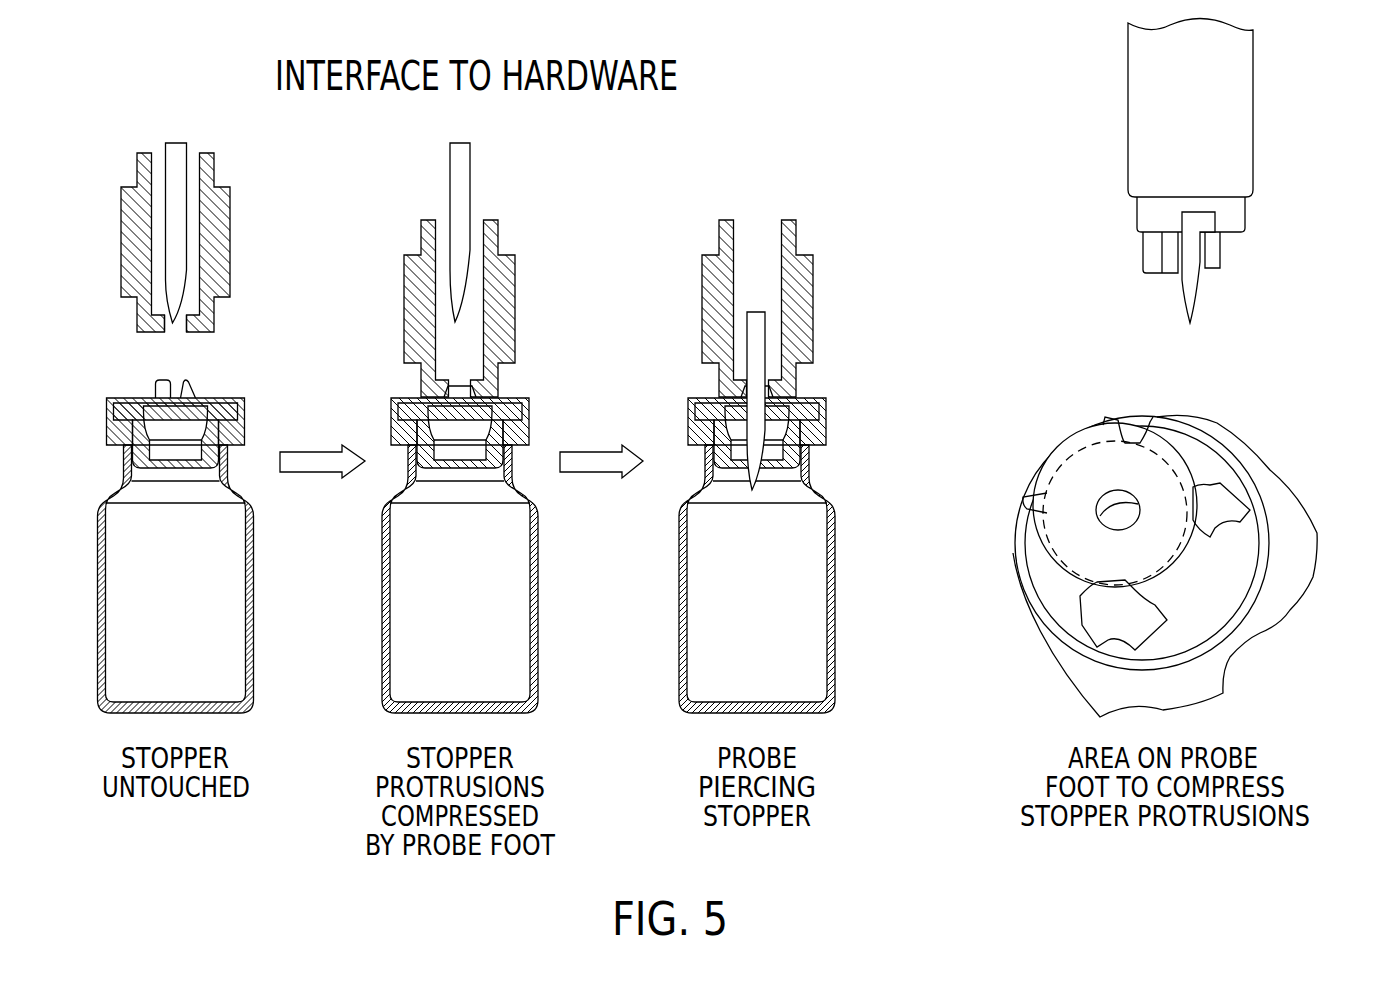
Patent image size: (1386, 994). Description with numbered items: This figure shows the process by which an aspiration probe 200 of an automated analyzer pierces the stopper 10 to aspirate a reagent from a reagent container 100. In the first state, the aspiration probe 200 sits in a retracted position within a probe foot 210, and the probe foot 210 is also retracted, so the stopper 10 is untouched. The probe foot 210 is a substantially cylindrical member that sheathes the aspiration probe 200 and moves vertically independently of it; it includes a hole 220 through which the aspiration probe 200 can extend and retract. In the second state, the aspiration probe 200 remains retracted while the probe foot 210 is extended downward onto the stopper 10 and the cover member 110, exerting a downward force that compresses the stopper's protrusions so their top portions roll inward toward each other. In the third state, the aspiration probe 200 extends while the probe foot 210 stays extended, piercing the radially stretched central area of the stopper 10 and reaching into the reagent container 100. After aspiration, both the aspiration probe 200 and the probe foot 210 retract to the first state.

The stopper 10 is at (225, 397).
The reagent container 100 is at (238, 551).
The cover member 110 is at (244, 430).
The aspiration probe 200 is at (177, 209).
The probe foot 210 is at (219, 256).
The hole 220 is at (176, 332).